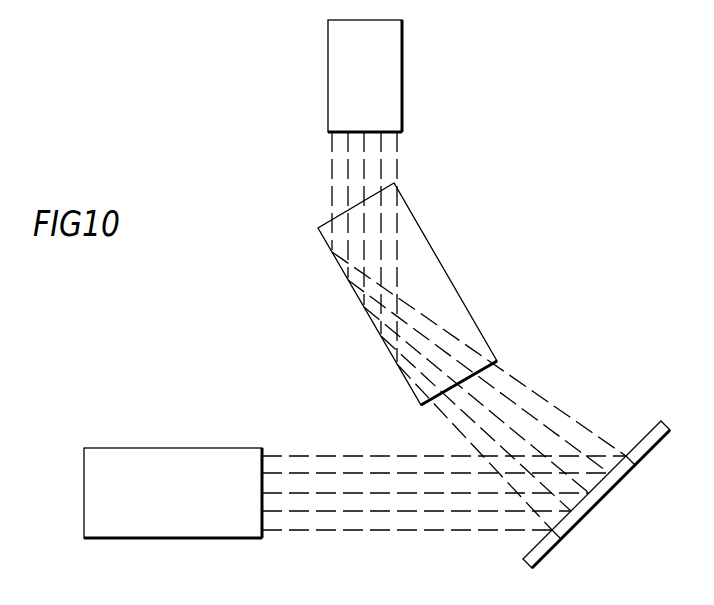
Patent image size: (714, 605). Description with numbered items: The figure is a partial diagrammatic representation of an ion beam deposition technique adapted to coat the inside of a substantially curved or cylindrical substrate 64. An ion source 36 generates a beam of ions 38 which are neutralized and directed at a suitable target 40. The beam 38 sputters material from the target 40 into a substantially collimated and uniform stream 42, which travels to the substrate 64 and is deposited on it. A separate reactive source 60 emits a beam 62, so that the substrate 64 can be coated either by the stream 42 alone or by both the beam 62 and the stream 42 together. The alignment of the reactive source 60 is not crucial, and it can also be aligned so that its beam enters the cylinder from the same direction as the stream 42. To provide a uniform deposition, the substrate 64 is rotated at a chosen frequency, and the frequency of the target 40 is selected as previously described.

The ion source 36 is at (177, 504).
The beam of ions 38 is at (397, 517).
The target 40 is at (610, 483).
The stream 42 is at (543, 413).
The source 60 is at (376, 84).
The beam 62 is at (384, 170).
The curved or cylindrical substrate 64 is at (442, 287).